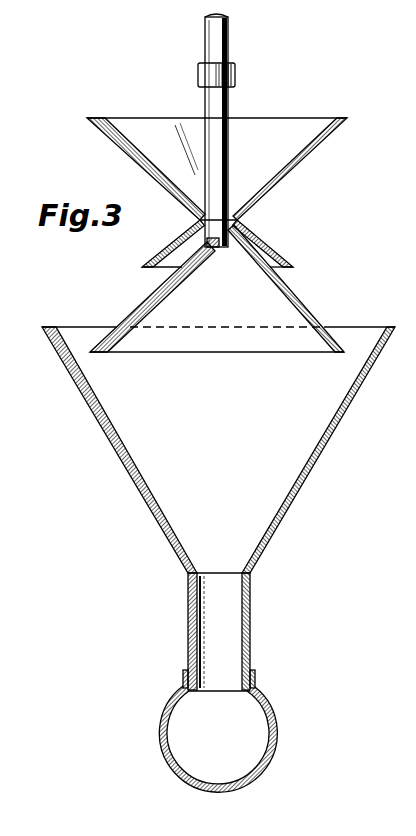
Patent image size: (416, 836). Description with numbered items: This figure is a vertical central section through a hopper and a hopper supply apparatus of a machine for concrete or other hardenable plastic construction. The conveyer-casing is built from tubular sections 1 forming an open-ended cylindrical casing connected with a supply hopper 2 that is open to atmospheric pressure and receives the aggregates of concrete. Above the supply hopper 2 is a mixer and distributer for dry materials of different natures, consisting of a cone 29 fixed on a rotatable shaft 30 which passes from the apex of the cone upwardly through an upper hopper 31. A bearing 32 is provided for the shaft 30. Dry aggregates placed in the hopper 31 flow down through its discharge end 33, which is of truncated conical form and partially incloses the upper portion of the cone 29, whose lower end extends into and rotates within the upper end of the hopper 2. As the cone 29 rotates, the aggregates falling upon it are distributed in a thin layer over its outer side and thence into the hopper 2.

The tubular section 1 is at (280, 717).
The supply hopper 2 is at (218, 509).
The cone 29 is at (290, 291).
The rotatable shaft 30 is at (229, 183).
The hopper 31 is at (217, 169).
The bearing 32 is at (236, 78).
The discharge end 33 is at (247, 238).